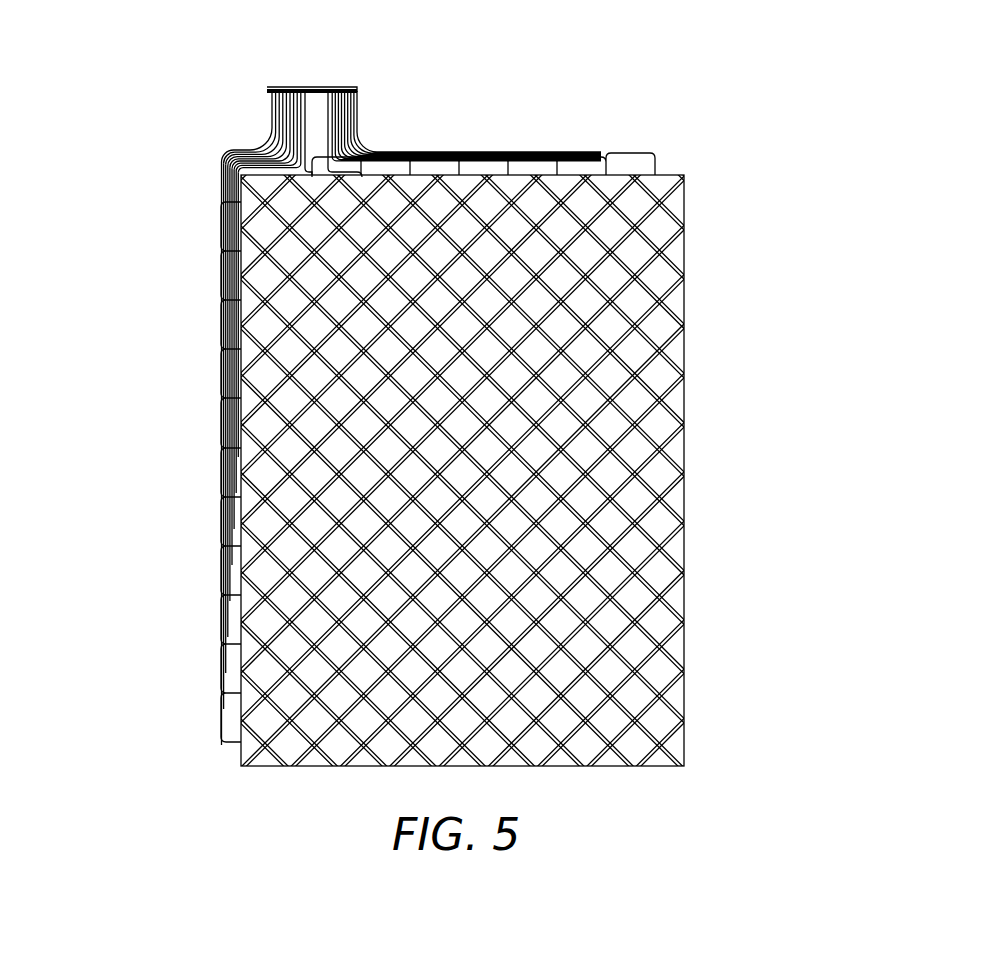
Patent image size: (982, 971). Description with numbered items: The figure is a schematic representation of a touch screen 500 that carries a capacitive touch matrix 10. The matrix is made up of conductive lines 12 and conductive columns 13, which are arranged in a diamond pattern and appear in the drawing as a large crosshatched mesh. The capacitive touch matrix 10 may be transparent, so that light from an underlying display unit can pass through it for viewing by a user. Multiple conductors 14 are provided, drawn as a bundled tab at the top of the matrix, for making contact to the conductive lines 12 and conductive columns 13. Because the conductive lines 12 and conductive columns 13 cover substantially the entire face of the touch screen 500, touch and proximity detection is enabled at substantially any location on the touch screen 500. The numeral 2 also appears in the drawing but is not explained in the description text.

The touch screen 500 is at (198, 105).
The conductors 14 is at (357, 103).
The conductive columns 13 is at (487, 178).
The capacitive touch matrix 10 is at (686, 174).
The conductive lines 12 is at (684, 282).
The electrode 2 is at (684, 380).